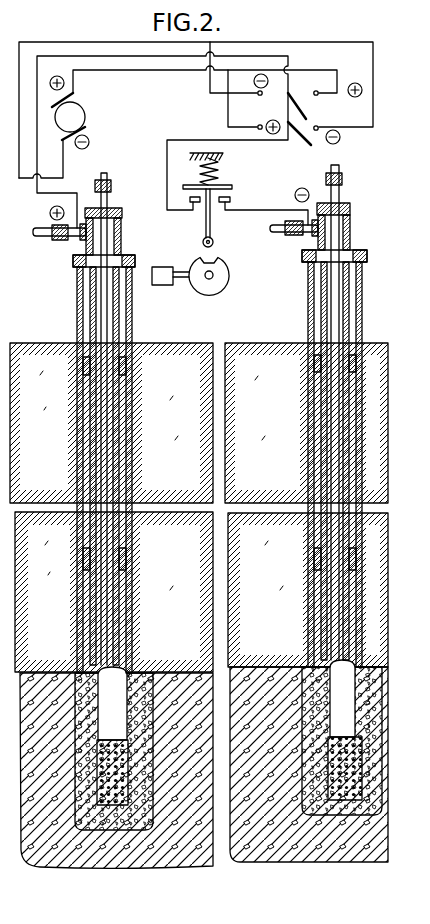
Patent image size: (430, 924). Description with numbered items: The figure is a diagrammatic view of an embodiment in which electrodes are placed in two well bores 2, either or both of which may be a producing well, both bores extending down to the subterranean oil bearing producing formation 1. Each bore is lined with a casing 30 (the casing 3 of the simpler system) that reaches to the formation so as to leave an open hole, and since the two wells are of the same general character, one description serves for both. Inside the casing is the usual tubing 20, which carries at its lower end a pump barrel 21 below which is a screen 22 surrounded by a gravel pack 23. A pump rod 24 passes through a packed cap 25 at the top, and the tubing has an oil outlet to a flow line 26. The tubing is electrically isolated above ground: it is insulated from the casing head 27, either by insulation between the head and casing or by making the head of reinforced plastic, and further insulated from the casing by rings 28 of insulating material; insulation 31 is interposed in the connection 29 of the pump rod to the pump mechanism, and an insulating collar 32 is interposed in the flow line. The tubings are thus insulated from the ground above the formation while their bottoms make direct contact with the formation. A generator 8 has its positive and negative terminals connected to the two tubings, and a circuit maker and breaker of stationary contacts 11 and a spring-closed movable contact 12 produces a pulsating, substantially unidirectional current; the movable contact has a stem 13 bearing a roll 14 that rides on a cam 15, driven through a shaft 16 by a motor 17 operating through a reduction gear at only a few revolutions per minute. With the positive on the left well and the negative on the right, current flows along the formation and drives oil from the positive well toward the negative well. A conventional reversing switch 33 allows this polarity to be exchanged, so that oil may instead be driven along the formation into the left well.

The producing formation 1 is at (190, 662).
The well bore 2 is at (90, 453).
The casing 3 is at (78, 618).
The generator 8 is at (80, 118).
The stationary contacts 11 is at (230, 200).
The movable contact 12 is at (232, 187).
The stem 13 is at (205, 234).
The roll 14 is at (215, 245).
The cam 15 is at (208, 295).
The shaft 16 is at (180, 280).
The motor 17 is at (160, 267).
The tubing 20 is at (91, 310).
The pump barrel 21 is at (120, 712).
The screen 22 is at (128, 792).
The gravel pack 23 is at (152, 740).
The pump rod 24 is at (108, 235).
The packed cap 25 is at (118, 208).
The flow line 26 is at (40, 230).
The casing head 27 is at (132, 260).
The rings of insulating material 28 is at (127, 365).
The connection 29 is at (104, 173).
The casing 30 is at (77, 330).
The insulation 31 is at (111, 186).
The insulating collar 32 is at (57, 240).
The reversing switch 33 is at (298, 110).